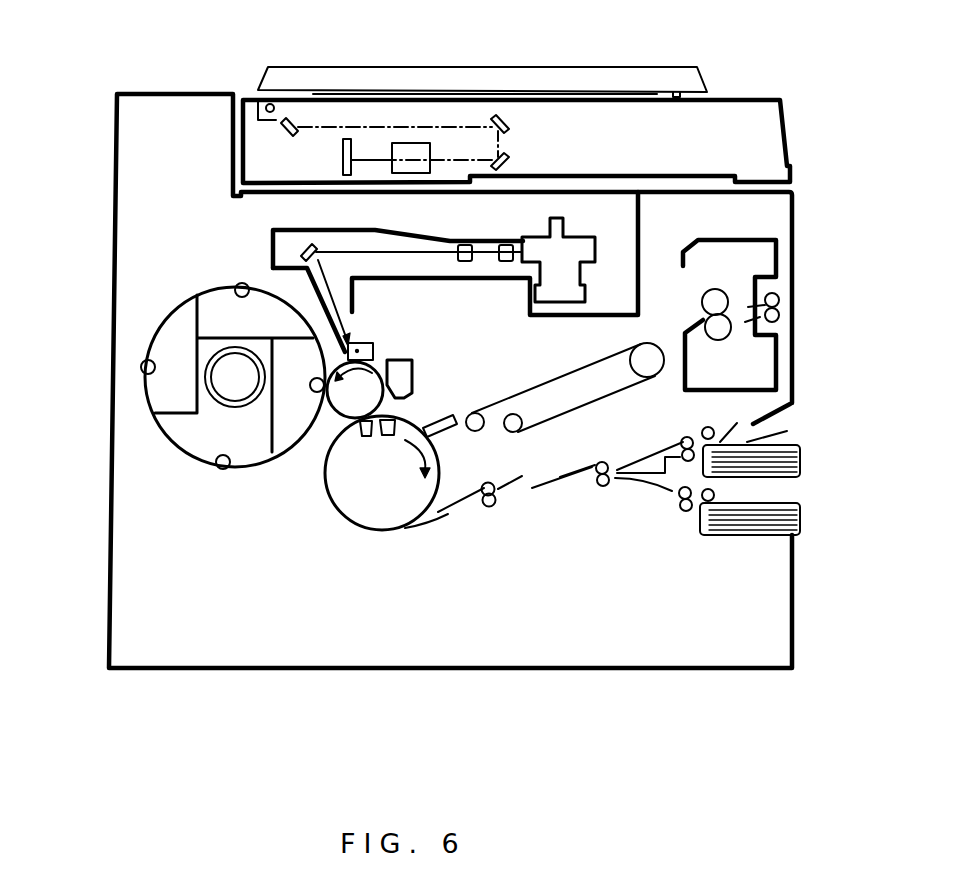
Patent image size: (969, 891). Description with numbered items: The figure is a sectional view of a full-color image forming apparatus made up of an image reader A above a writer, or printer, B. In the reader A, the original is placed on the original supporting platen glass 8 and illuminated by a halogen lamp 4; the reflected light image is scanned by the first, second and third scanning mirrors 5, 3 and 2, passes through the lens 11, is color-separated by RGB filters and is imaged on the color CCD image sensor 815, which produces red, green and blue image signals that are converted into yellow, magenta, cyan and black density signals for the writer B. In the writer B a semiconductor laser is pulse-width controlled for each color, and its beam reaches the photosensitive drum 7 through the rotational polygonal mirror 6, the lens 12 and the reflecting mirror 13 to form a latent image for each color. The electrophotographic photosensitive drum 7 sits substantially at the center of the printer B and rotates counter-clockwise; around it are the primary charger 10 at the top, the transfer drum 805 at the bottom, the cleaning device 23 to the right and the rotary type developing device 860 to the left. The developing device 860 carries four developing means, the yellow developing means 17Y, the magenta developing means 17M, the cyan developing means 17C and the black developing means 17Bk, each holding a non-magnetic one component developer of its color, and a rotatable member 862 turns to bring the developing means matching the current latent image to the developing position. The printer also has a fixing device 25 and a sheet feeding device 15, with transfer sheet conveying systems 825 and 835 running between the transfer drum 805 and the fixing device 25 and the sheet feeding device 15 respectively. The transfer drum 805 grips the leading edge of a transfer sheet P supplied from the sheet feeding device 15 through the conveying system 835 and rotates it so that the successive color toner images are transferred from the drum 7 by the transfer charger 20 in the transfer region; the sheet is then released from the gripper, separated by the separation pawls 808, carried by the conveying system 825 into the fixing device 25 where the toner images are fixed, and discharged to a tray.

The scanning mirror 2 is at (507, 162).
The scanning mirror 3 is at (507, 119).
The halogen lamp 4 is at (273, 104).
The scanning mirror 5 is at (293, 124).
The rotational polygonal mirror 6 is at (573, 246).
The photosensitive drum 7 is at (347, 402).
The original supporting platen glass 8 is at (491, 92).
The primary charger 10 is at (372, 350).
The lens 11 is at (418, 143).
The lens 12 is at (505, 263).
The reflecting mirror 13 is at (313, 247).
The sheet feeding device 15 is at (778, 508).
The black developing means 17Bk is at (220, 305).
The magenta developing means 17M is at (172, 355).
The cyan developing means 17C is at (223, 470).
The yellow developing means 17Y is at (283, 437).
The transfer charger 20 is at (370, 430).
The cleaning device 23 is at (403, 377).
The fixing device 25 is at (768, 368).
The transfer drum 805 is at (384, 530).
The separation pawls 808 is at (452, 437).
The CCD image sensor 815 is at (351, 140).
The transfer sheet conveying system 825 is at (560, 380).
The transfer sheet conveying system 835 is at (563, 488).
The rotary type developing device 860 is at (136, 400).
The rotatable member 862 is at (230, 388).
The image reader A is at (604, 120).
The writer B is at (128, 452).
The recording paper P is at (790, 458).